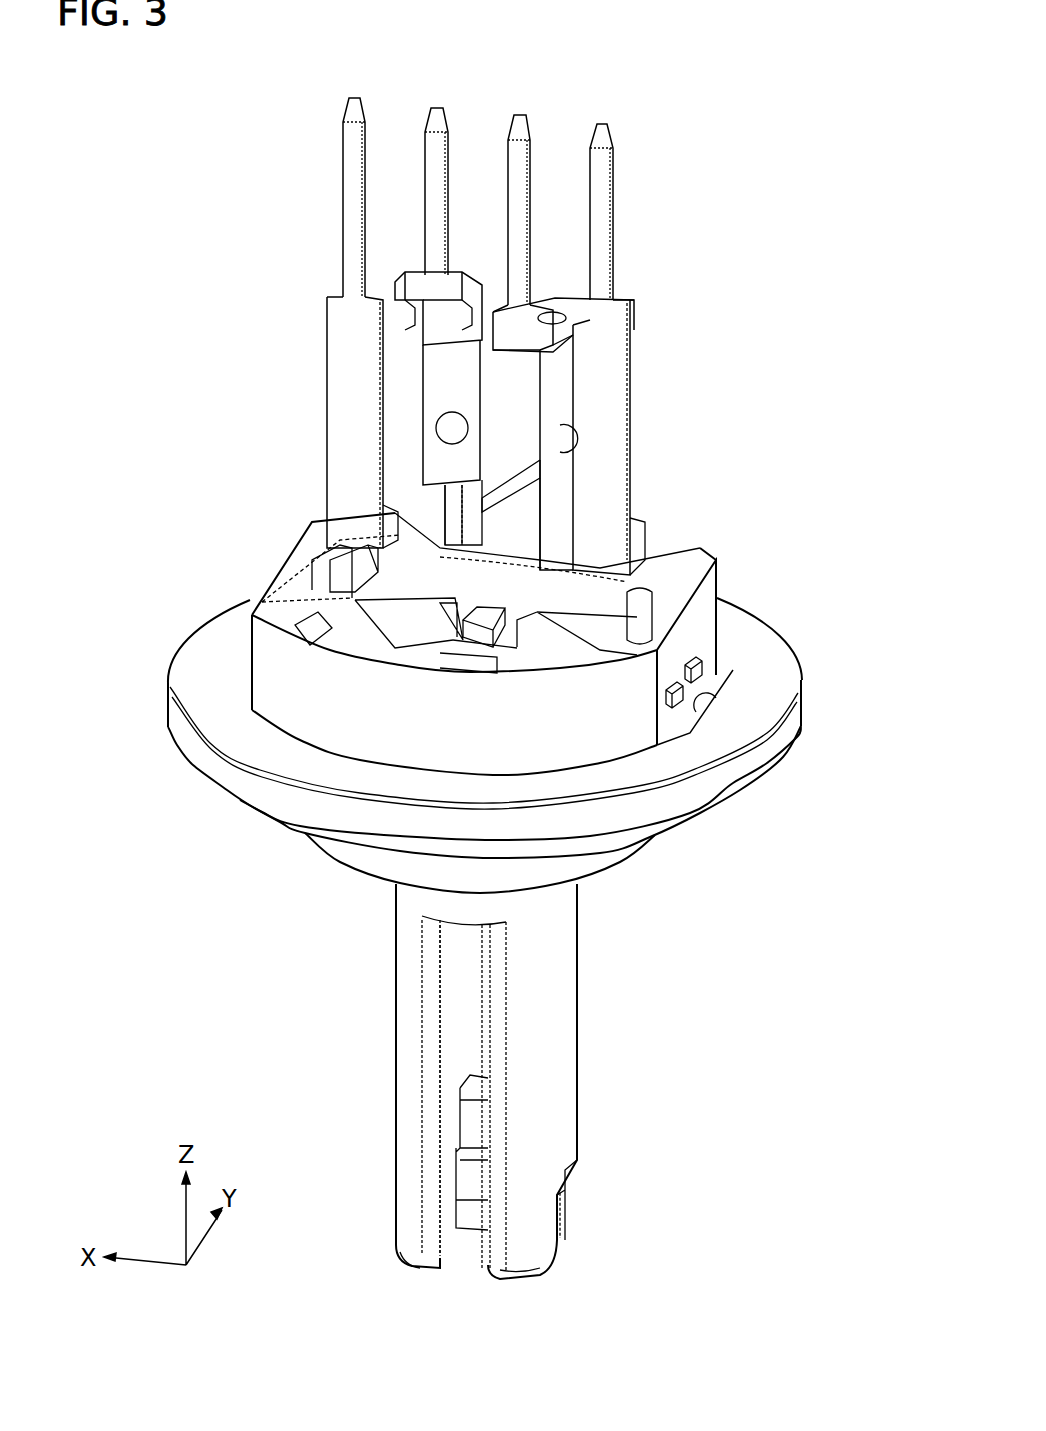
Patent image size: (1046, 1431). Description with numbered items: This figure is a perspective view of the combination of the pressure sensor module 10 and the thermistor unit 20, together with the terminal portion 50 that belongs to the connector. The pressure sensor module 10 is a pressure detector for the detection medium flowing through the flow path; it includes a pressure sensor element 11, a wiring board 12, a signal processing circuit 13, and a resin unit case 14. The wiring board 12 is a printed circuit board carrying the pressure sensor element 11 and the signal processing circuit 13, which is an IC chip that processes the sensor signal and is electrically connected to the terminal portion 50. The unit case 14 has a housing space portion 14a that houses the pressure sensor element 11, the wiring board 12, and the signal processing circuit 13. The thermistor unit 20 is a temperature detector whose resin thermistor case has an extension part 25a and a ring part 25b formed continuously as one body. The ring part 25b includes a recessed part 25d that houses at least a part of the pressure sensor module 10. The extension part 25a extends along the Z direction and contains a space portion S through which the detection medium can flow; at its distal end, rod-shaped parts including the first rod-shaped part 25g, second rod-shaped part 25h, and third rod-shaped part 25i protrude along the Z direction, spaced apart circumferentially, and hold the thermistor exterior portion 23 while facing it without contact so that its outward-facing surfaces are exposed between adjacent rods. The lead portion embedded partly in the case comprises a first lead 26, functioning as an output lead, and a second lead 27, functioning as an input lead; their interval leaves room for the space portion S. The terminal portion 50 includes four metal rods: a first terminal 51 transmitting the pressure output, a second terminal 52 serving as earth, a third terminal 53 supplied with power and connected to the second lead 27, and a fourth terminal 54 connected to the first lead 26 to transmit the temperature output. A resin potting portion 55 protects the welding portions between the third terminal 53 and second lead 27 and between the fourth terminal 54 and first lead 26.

The pressure sensor module 10 is at (287, 556).
The pressure sensor element 11 is at (490, 625).
The wiring board 12 is at (370, 630).
The signal processing circuit 13 is at (443, 660).
The unit case 14 is at (290, 575).
The housing space portion 14a is at (640, 625).
The thermistor unit 20 is at (366, 940).
The thermistor exterior portion 23 is at (470, 1228).
The extension part 25a is at (548, 1005).
The ring part 25b is at (640, 805).
The recessed part 25d is at (710, 702).
The first rod-shaped part 25g is at (575, 1244).
The second rod-shaped part 25h is at (532, 1280).
The third rod-shaped part 25i is at (412, 1270).
The first lead 26 is at (455, 505).
The second lead 27 is at (565, 530).
The terminal portion 50 is at (681, 182).
The first terminal 51 is at (368, 142).
The second terminal 52 is at (616, 163).
The third terminal 53 is at (535, 156).
The fourth terminal 54 is at (456, 150).
The potting portion 55 is at (619, 305).
The space portion S is at (470, 1052).